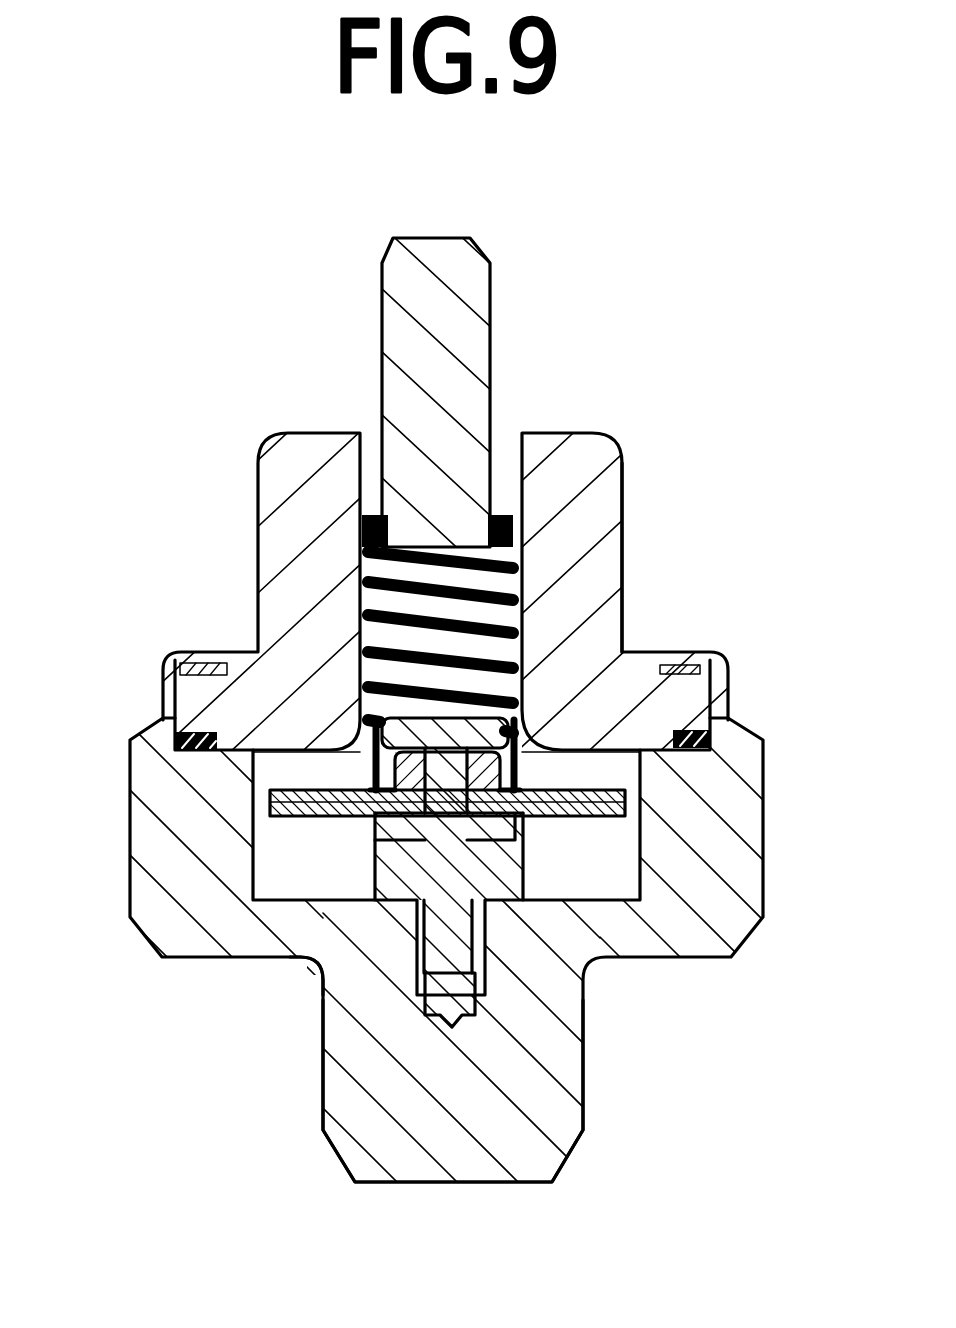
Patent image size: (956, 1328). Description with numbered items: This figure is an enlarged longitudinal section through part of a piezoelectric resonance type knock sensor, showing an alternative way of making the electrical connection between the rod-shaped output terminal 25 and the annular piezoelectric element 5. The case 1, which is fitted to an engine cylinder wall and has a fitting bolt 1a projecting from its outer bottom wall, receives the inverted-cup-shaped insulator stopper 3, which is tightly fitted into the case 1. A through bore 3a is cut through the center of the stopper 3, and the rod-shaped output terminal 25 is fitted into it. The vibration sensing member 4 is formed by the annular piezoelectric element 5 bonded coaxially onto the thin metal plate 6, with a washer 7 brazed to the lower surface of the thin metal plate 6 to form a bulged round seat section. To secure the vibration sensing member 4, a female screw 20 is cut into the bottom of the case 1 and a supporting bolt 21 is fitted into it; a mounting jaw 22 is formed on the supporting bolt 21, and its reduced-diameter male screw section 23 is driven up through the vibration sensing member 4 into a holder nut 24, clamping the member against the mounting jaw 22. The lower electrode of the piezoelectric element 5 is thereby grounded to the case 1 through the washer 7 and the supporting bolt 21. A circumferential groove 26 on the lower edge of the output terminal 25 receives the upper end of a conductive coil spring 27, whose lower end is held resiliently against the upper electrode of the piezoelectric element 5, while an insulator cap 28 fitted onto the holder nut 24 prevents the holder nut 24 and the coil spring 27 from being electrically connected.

The case 1 is at (137, 742).
The fitting bolt 1a is at (328, 1105).
The inverted-cup-shaped insulator stopper 3 is at (560, 433).
The through bore 3a is at (623, 487).
The vibration sensing member 4 is at (294, 781).
The annular piezoelectric element 5 is at (272, 795).
The thin metal plate 6 is at (330, 991).
The washer 7 is at (525, 827).
The female screw 20 is at (417, 983).
The supporting bolt 21 is at (470, 933).
The mounting jaw 22 is at (520, 862).
The male screw section 23 is at (458, 777).
The holder nut 24 is at (505, 760).
The rod-shaped output terminal 25 is at (390, 323).
The circumferential groove 26 is at (372, 542).
The conductive coil spring 27 is at (372, 583).
The insulator cap 28 is at (518, 567).